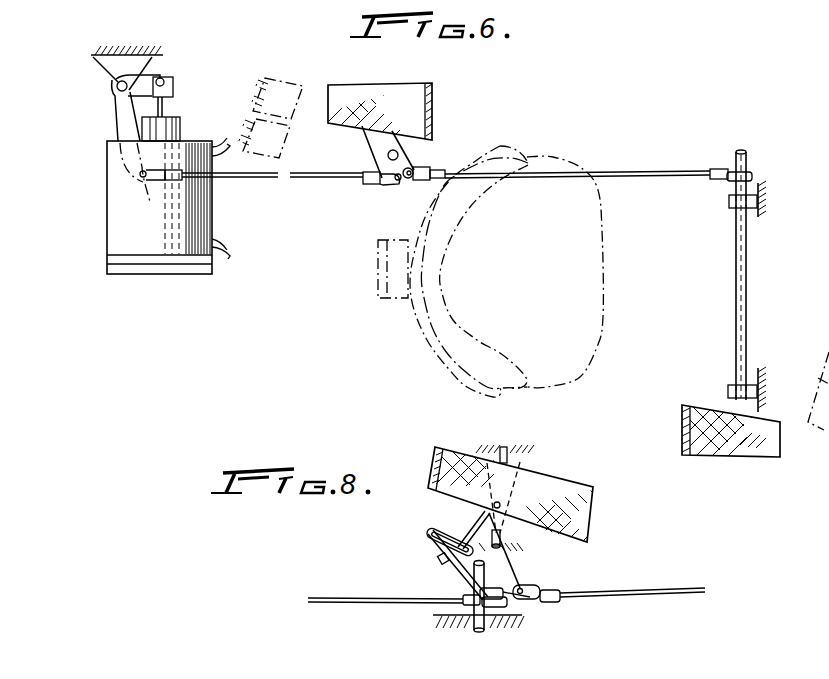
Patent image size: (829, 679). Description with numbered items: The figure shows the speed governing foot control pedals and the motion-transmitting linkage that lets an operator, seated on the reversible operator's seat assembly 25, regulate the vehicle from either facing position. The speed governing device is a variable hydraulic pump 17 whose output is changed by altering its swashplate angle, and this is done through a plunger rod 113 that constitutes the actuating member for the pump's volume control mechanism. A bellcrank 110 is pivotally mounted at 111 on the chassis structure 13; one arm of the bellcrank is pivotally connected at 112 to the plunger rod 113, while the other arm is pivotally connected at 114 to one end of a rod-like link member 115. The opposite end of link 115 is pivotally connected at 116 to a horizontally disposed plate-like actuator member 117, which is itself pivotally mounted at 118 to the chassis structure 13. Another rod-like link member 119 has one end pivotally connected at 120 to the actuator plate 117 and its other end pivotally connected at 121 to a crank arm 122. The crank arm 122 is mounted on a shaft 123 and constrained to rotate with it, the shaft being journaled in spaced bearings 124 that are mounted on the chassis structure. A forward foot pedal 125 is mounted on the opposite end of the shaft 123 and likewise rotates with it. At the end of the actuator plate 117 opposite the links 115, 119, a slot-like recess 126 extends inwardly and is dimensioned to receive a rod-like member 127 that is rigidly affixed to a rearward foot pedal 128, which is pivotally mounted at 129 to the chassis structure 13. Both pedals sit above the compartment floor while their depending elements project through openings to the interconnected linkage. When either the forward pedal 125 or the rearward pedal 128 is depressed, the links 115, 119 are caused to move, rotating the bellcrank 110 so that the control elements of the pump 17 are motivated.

In FIG. 6, the chassis structure 13 is at (148, 53).
In FIG. 8, the chassis structure 13 is at (522, 450).
In FIG. 6, the variable hydraulic pump 17 is at (124, 235).
In FIG. 6, the operator's seat assembly 25 is at (415, 325).
In FIG. 6, the bellcrank 110 is at (118, 110).
In FIG. 6, the pivot 111 is at (116, 86).
In FIG. 6, the pivotal connection 112 is at (165, 79).
In FIG. 6, the plunger rod 113 is at (164, 100).
In FIG. 6, the pivotal connection 114 is at (157, 197).
In FIG. 6, the rod-like link member 115 is at (230, 182).
In FIG. 8, the rod-like link member 115 is at (355, 603).
In FIG. 6, the pivotal connection 116 is at (395, 185).
In FIG. 8, the pivotal connection 116 is at (476, 596).
In FIG. 6, the plate-like actuator member 117 is at (403, 163).
In FIG. 8, the plate-like actuator member 117 is at (458, 564).
In FIG. 6, the pivot 118 is at (388, 155).
In FIG. 8, the pivot 118 is at (486, 624).
In FIG. 6, the rod-like link member 119 is at (665, 172).
In FIG. 8, the rod-like link member 119 is at (690, 590).
In FIG. 6, the pivotal connection 120 is at (413, 167).
In FIG. 8, the pivotal connection 120 is at (535, 590).
In FIG. 6, the pivotal connection 121 is at (730, 172).
In FIG. 6, the crank arm 122 is at (752, 177).
In FIG. 6, the shaft 123 is at (736, 262).
In FIG. 6, the bearings 124 is at (729, 201).
In FIG. 6, the foot pedal 125 is at (736, 445).
In FIG. 8, the slot-like recess 126 is at (428, 530).
In FIG. 8, the rod-like member 127 is at (470, 520).
In FIG. 6, the foot pedal 128 is at (355, 93).
In FIG. 8, the foot pedal 128 is at (460, 449).
In FIG. 8, the pivot 129 is at (505, 451).